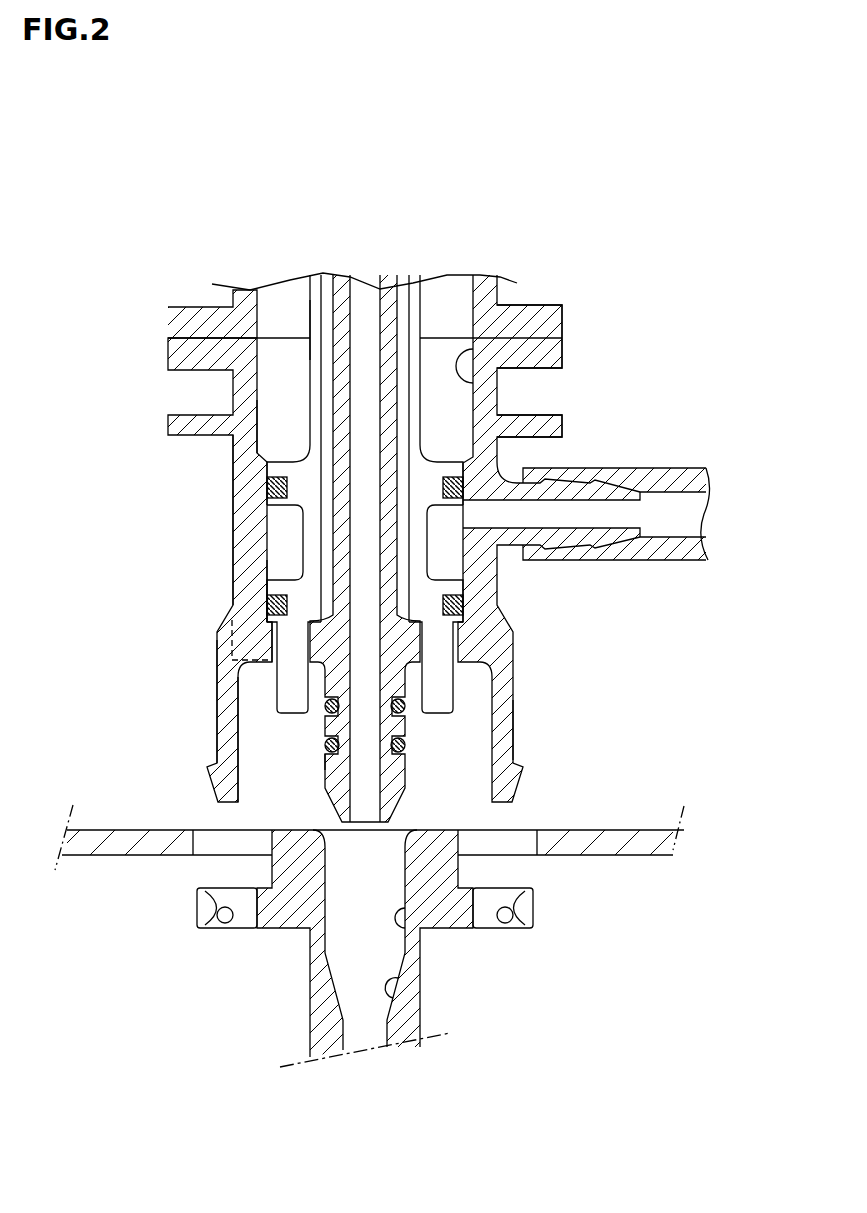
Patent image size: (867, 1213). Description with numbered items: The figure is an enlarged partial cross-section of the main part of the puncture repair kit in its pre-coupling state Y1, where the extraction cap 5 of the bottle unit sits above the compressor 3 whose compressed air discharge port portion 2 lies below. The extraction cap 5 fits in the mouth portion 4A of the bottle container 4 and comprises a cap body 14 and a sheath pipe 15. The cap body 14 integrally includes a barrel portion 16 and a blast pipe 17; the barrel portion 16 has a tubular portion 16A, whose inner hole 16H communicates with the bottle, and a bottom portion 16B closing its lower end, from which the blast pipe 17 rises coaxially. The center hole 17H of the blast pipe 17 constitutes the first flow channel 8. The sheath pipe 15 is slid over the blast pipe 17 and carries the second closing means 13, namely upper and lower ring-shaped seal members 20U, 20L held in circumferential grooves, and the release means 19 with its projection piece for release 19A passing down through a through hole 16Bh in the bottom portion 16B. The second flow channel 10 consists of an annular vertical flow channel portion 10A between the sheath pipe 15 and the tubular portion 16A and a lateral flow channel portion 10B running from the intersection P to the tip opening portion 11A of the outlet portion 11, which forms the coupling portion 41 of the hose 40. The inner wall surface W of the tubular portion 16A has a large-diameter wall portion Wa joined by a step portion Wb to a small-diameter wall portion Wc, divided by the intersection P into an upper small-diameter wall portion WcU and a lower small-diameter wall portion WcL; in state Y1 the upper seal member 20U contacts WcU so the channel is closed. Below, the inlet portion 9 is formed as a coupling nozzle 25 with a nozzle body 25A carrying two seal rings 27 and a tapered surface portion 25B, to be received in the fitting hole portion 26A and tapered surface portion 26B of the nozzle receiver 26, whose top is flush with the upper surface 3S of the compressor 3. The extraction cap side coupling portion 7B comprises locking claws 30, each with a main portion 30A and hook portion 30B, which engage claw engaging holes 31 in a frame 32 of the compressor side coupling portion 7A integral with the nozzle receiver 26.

The compressed air discharge port portion 2 is at (593, 935).
The compressor 3 is at (406, 827).
The upper surface of the compressor 3S is at (627, 828).
The bottle container 4 is at (207, 263).
The mouth portion 4A is at (198, 328).
The extraction cap 5 is at (599, 330).
The compressor side coupling portion 7A is at (228, 916).
The extraction cap side coupling portion 7B is at (123, 685).
The first flow channel 8 is at (350, 307).
The inlet portion 9 is at (603, 737).
The second flow channel 10 is at (708, 338).
The vertical flow channel portion 10A is at (475, 381).
The lateral flow channel portion 10B is at (548, 515).
The outlet portion 11 is at (611, 514).
The tip opening portion 11A is at (670, 468).
The second closing means 13 is at (648, 563).
The cap body 14 is at (78, 450).
The sheath pipe 15 is at (310, 307).
The barrel portion 16 is at (120, 500).
The tubular portion 16A is at (247, 515).
The bottom portion 16B is at (247, 592).
The through hole 16Bh is at (273, 660).
The inner hole 16H is at (258, 362).
The blast pipe 17 is at (343, 467).
The center hole 17H is at (356, 485).
The release means 19 is at (152, 655).
The projection piece for release 19A is at (248, 688).
The lower ring-shaped seal member 20L is at (545, 545).
The upper ring-shaped seal member 20U is at (545, 484).
The coupling nozzle 25 is at (501, 758).
The nozzle body 25A is at (406, 712).
The tapered surface portion 25B is at (407, 752).
The nozzle receiver 26 is at (526, 953).
The fitting hole portion 26A is at (405, 915).
The tapered surface portion 26B is at (396, 990).
The seal ring 27 is at (325, 757).
The locking claw 30 is at (147, 721).
The main portion 30A is at (262, 697).
The hook portion 30B is at (213, 793).
The claw engaging hole 31 is at (280, 922).
The frame 32 is at (287, 930).
The hose 40 is at (670, 547).
The coupling portion 41 is at (642, 507).
The intersection P is at (476, 547).
The inner wall surface W is at (469, 446).
The large-diameter wall portion Wa is at (472, 402).
The step portion Wb is at (462, 462).
The small-diameter wall portion Wc is at (622, 633).
The lower small-diameter wall portion WcL is at (458, 648).
The upper small-diameter wall portion WcU is at (465, 683).
The pre-coupling state Y1 is at (532, 732).